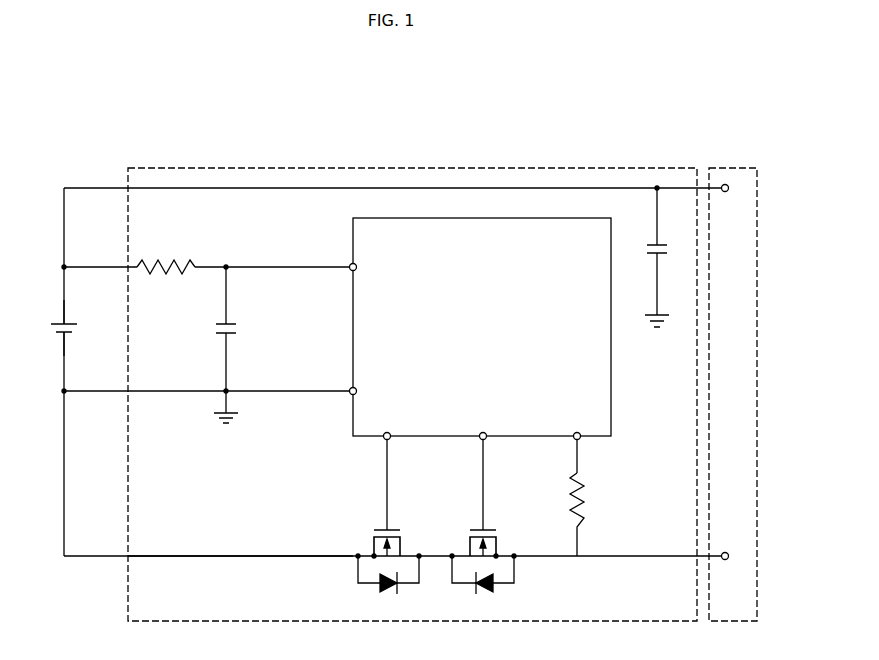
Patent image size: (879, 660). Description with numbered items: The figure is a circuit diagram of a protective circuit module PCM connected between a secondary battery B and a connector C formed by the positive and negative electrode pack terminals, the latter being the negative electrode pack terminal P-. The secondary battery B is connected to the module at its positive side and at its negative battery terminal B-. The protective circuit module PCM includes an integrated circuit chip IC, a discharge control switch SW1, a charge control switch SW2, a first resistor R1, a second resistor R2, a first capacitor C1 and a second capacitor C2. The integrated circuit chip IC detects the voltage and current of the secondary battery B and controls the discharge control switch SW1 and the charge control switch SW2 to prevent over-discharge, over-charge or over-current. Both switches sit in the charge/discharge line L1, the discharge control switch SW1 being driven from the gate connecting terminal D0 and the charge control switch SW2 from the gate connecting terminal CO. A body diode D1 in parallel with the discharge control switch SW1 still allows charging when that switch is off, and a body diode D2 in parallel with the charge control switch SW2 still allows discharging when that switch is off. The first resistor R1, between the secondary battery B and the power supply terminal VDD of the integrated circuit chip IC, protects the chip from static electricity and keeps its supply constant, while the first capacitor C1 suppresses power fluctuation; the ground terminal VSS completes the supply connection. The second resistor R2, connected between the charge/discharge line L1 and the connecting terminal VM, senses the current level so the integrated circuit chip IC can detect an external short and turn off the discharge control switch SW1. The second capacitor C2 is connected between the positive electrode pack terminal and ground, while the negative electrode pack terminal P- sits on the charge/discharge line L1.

The protective circuit module PCM is at (690, 162).
The connector C is at (758, 163).
The secondary battery B is at (71, 328).
The battery negative terminal B- is at (192, 391).
The first resistor R1 is at (166, 257).
The first capacitor C1 is at (235, 344).
The integrated circuit chip IC is at (482, 327).
The power supply terminal VDD is at (370, 267).
The ground terminal VSS is at (369, 391).
The gate connecting terminal of the discharge control switch D0 is at (387, 473).
The gate connecting terminal of the charge control switch CO is at (482, 473).
The connecting terminal of the second resistor VM is at (577, 445).
The second resistor R2 is at (588, 514).
The second capacitor C2 is at (666, 256).
The negative electrode pack terminal P- is at (736, 556).
The discharge control switch SW1 is at (371, 544).
The charge control switch SW2 is at (467, 544).
The body diode D1 is at (388, 583).
The body diode D2 is at (483, 583).
The charge/discharge line L1 is at (226, 558).